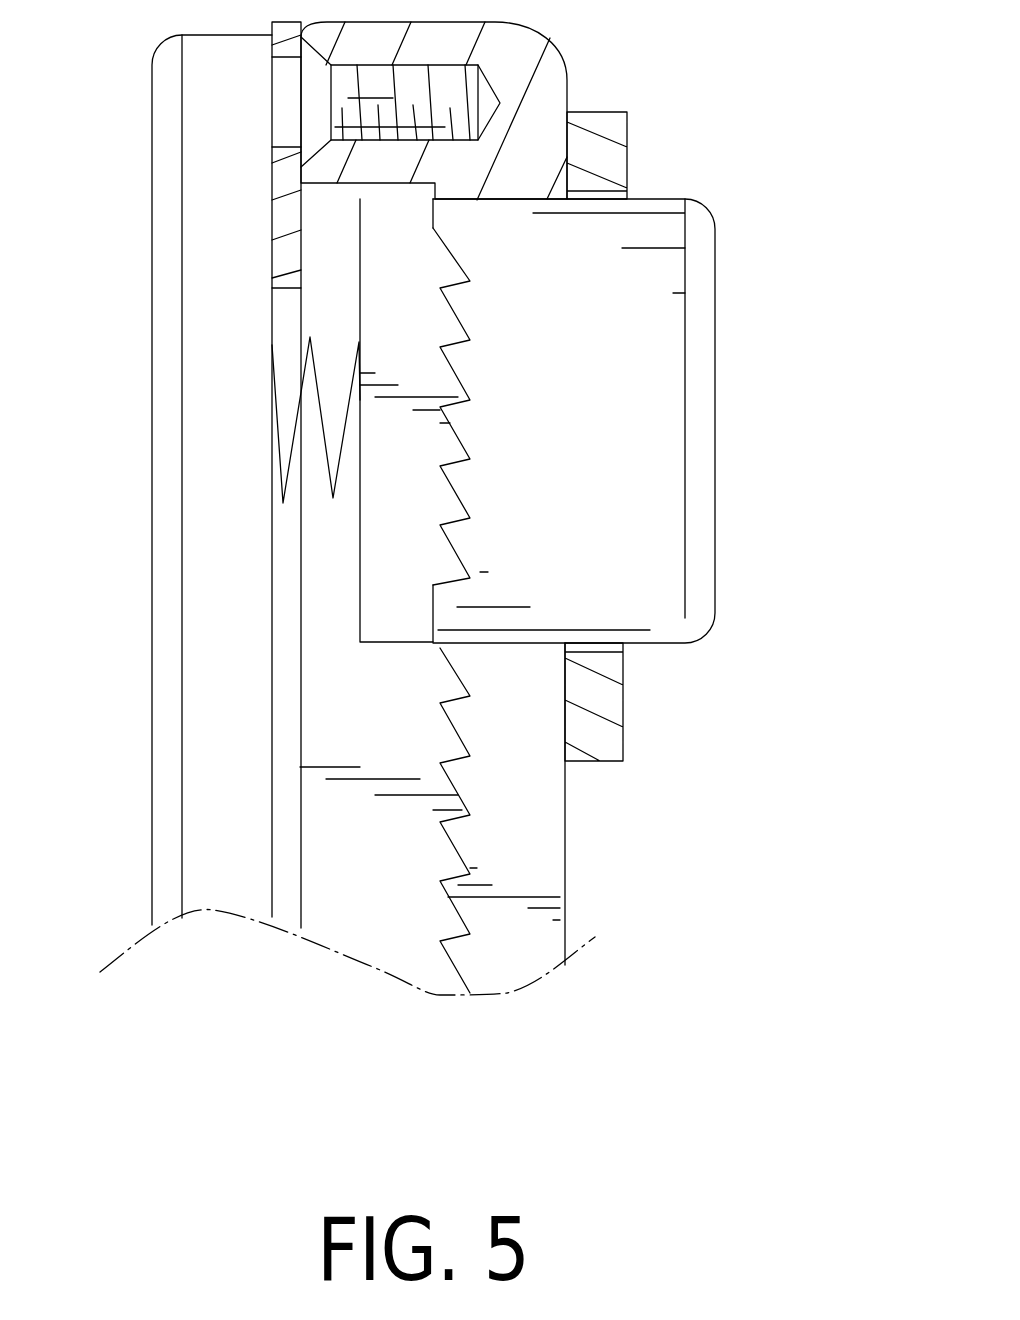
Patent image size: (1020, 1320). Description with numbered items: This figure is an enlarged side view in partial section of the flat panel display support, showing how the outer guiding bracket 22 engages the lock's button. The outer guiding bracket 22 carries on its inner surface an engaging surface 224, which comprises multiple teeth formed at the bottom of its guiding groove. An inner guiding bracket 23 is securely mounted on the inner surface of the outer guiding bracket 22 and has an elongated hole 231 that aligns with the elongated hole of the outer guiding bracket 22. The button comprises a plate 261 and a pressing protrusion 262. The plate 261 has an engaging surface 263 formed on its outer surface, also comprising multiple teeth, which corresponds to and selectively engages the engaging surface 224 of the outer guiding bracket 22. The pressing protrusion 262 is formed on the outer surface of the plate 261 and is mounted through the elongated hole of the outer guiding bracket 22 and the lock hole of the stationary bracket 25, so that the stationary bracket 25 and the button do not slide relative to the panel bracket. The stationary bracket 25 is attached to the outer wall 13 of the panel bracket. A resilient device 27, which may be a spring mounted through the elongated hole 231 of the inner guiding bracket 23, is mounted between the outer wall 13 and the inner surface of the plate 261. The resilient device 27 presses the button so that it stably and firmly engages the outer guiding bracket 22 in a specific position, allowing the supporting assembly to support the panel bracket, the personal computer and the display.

The outer wall 13 is at (215, 357).
The outer guiding bracket 22 is at (553, 88).
The inner guiding bracket 23 is at (283, 213).
The stationary bracket 25 is at (607, 697).
The resilient device 27 is at (328, 478).
The engaging surface 224 is at (435, 775).
The elongated hole 231 is at (285, 825).
The plate 261 is at (372, 577).
The pressing protrusion 262 is at (655, 343).
The engaging surface 263 is at (455, 460).